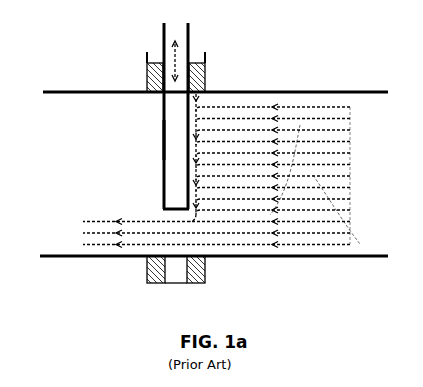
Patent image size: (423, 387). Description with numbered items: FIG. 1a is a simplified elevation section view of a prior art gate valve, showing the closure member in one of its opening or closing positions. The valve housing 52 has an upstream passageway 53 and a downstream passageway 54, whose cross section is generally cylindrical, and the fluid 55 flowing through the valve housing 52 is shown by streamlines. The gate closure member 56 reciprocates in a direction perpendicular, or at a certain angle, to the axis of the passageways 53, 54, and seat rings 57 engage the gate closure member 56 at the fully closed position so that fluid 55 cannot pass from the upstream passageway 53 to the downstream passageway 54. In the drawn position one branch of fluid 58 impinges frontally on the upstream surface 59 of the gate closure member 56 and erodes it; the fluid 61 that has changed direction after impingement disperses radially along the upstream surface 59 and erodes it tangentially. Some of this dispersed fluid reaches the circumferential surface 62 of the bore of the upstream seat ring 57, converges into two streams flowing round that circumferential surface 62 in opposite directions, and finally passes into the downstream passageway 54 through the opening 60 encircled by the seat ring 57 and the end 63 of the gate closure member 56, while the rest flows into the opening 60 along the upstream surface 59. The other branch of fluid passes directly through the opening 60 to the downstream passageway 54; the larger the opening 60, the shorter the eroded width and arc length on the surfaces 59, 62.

The valve housing 52 is at (277, 258).
The upstream passageway 53 is at (358, 167).
The downstream passageway 54 is at (72, 165).
The fluid 55 is at (313, 175).
The gate closure member 56 is at (163, 47).
The seat rings 57 is at (190, 271).
The branch of fluid 58 is at (293, 165).
The upstream surface 59 is at (197, 119).
The opening 60 is at (175, 238).
The fluid changed its flow direction 61 is at (163, 141).
The circumferential surface 62 is at (190, 99).
The end 63 is at (168, 212).